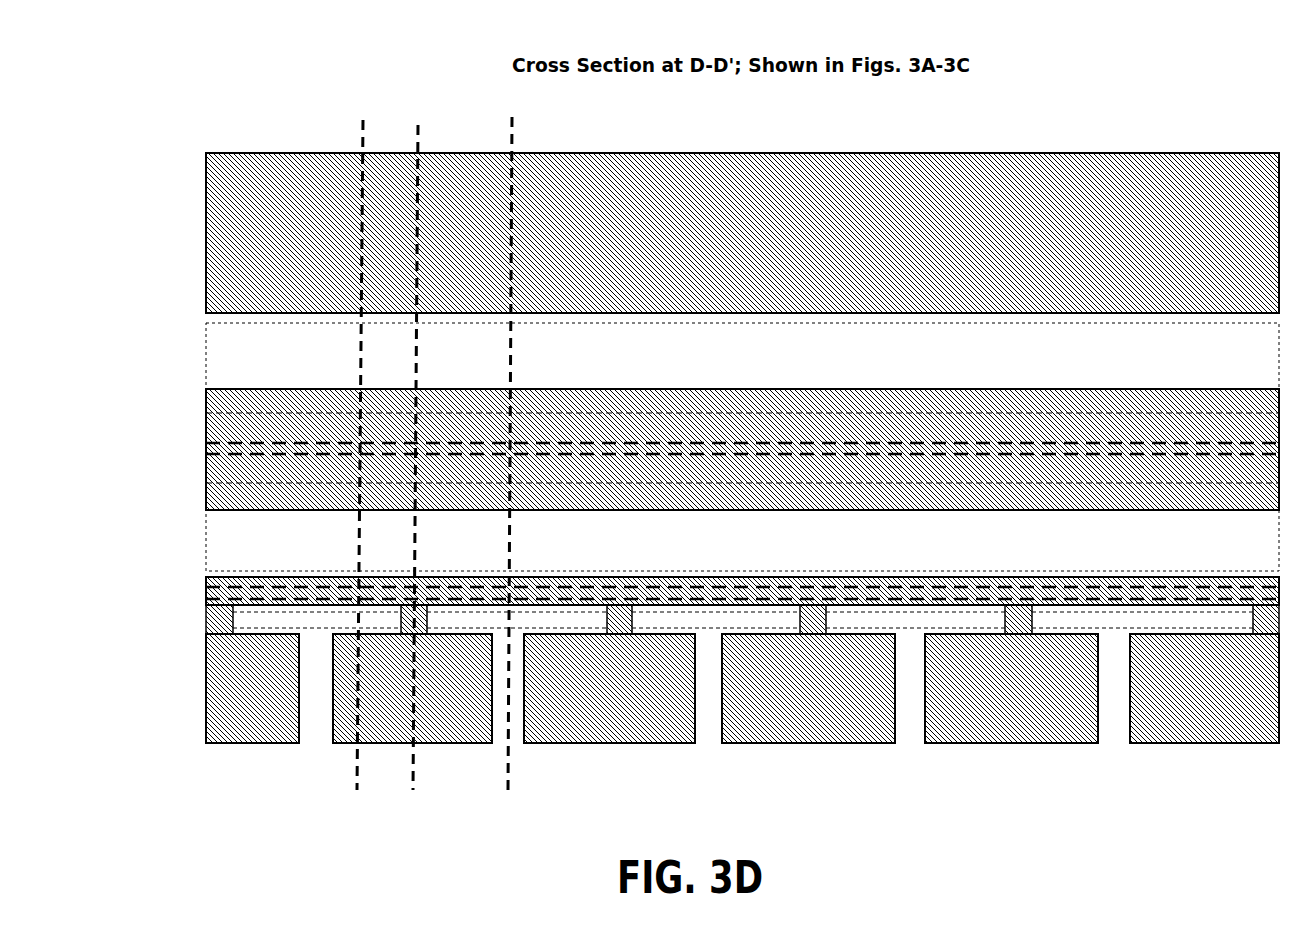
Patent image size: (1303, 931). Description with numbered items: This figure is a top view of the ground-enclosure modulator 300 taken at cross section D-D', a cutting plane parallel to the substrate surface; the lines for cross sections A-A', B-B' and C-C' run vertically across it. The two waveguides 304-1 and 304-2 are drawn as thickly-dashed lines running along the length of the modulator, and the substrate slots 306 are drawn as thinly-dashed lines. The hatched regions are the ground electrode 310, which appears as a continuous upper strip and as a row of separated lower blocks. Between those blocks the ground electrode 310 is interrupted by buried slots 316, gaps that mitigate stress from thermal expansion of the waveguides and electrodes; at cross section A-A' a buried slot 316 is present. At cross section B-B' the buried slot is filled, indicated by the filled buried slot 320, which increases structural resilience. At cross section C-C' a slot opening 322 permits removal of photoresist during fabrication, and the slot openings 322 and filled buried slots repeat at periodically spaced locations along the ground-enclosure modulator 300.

The ground-enclosure modulator 300 is at (210, 35).
The ground electrode 310 is at (207, 242).
The substrate slot 306 is at (207, 360).
The first waveguide 304-1 is at (207, 452).
The second waveguide 304-2 is at (207, 596).
The buried slot 316 is at (567, 619).
The filled buried slot 320 is at (452, 722).
The slot opening 322 is at (512, 735).